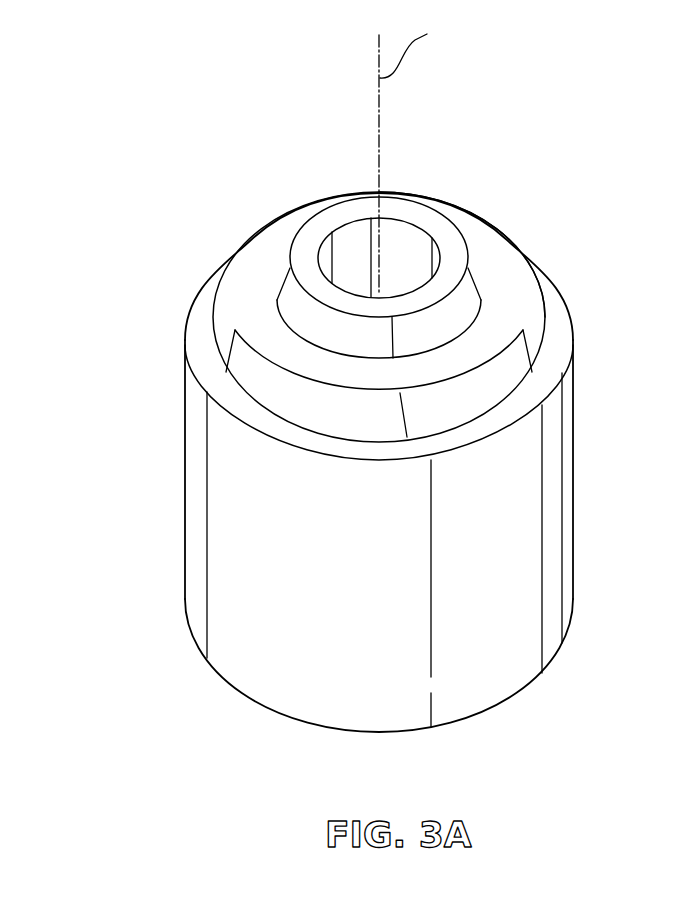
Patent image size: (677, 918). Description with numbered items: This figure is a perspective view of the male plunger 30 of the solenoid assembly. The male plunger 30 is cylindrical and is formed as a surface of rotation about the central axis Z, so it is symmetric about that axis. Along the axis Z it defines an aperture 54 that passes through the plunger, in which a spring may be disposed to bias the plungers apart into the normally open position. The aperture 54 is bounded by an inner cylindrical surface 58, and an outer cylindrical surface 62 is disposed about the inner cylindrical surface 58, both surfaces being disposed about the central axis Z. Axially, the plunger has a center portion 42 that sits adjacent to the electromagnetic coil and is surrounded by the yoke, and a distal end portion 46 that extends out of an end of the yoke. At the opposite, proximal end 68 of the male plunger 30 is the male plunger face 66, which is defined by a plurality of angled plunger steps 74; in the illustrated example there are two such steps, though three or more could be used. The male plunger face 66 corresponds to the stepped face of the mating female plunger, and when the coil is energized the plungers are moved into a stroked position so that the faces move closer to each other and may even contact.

The male plunger 30 is at (543, 154).
The center portion 42 is at (368, 496).
The distal end portion 46 is at (492, 710).
The aperture 54 is at (403, 253).
The inner cylindrical surface 58 is at (343, 238).
The outer cylindrical surface 62 is at (556, 517).
The male plunger face 66 is at (518, 282).
The proximal end 68 is at (540, 256).
The angled plunger steps 74 is at (450, 248).